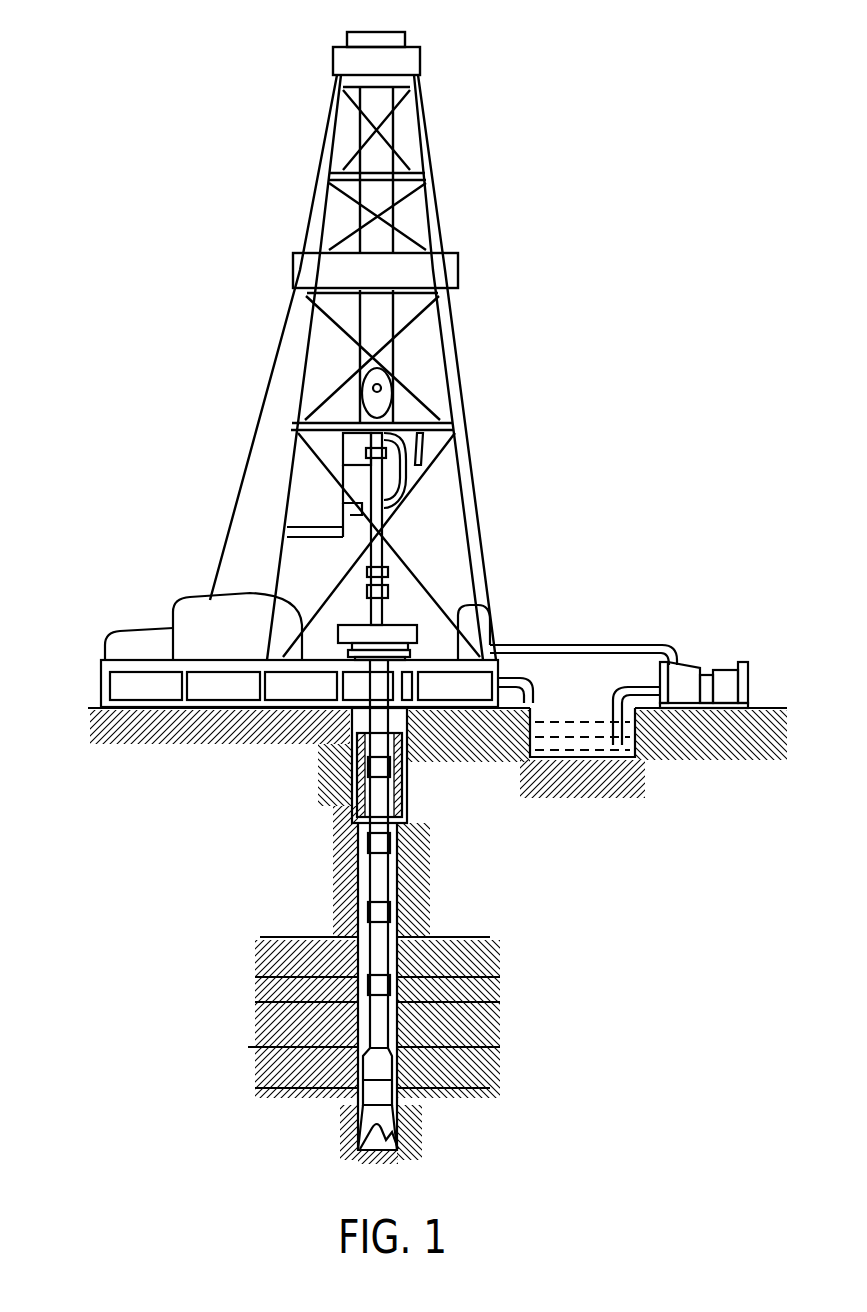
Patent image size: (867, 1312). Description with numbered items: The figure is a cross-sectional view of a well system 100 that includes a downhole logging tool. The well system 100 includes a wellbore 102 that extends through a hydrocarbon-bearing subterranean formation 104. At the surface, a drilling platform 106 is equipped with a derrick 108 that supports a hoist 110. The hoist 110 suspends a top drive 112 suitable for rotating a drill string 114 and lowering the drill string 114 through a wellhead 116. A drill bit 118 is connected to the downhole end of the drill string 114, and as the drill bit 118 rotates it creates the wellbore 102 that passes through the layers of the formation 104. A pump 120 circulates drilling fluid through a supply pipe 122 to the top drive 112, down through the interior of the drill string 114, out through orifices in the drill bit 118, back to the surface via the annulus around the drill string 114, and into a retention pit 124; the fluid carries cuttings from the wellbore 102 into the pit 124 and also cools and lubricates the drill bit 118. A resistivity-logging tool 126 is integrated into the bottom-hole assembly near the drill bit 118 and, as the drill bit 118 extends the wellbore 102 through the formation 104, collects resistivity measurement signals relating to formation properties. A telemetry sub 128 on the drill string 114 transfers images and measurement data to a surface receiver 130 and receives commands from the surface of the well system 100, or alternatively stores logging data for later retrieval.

The well system 100 is at (272, 68).
The wellbore 102 is at (400, 898).
The subterranean formation 104 is at (521, 922).
The drilling platform 106 is at (101, 688).
The derrick 108 is at (438, 213).
The hoist 110 is at (388, 391).
The top drive 112 is at (384, 487).
The drill string 114 is at (390, 891).
The wellhead 116 is at (412, 627).
The drill bit 118 is at (392, 1136).
The pump 120 is at (688, 663).
The supply pipe 122 is at (598, 645).
The retention pit 124 is at (540, 760).
The resistivity-logging tool 126 is at (373, 1095).
The telemetry sub 128 is at (373, 1069).
The surface receiver 130 is at (392, 574).